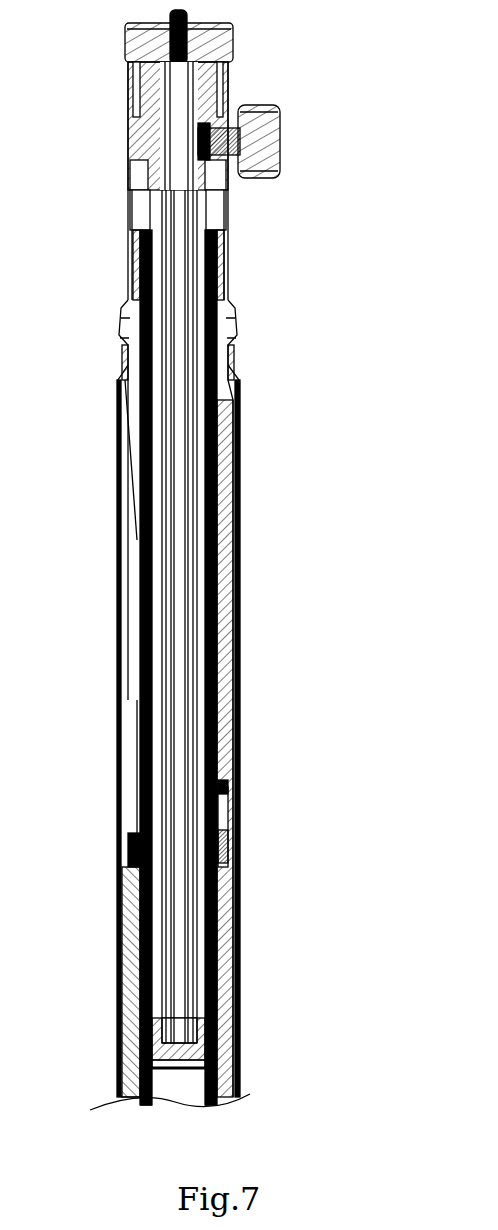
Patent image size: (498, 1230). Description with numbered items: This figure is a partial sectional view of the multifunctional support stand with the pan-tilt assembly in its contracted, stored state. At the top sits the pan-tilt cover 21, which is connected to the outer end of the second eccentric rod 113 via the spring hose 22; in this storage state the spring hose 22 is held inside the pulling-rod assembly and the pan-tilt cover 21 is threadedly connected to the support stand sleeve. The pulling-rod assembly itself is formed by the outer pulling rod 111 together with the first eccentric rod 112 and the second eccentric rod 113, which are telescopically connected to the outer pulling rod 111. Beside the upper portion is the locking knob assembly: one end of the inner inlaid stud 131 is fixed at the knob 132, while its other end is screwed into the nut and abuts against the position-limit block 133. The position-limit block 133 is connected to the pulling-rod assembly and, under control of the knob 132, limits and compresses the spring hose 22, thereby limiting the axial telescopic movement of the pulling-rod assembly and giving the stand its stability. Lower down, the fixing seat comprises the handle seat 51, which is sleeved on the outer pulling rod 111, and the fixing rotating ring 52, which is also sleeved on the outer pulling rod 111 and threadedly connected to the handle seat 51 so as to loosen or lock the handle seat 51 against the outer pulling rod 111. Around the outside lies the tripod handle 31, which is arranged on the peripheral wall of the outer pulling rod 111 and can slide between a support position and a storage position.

The pan-tilt cover 21 is at (233, 30).
The position-limit block 133 is at (225, 102).
The knob 132 is at (279, 109).
The inner inlaid stud 131 is at (280, 137).
The fixing rotating ring 52 is at (130, 228).
The handle seat 51 is at (126, 316).
The spring hose 22 is at (190, 238).
The tripod handle 31 is at (240, 478).
The outer pulling rod 111 is at (228, 972).
The second eccentric rod 113 is at (241, 1000).
The first eccentric rod 112 is at (216, 1036).